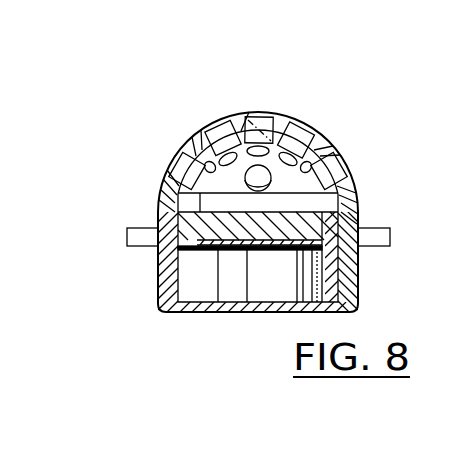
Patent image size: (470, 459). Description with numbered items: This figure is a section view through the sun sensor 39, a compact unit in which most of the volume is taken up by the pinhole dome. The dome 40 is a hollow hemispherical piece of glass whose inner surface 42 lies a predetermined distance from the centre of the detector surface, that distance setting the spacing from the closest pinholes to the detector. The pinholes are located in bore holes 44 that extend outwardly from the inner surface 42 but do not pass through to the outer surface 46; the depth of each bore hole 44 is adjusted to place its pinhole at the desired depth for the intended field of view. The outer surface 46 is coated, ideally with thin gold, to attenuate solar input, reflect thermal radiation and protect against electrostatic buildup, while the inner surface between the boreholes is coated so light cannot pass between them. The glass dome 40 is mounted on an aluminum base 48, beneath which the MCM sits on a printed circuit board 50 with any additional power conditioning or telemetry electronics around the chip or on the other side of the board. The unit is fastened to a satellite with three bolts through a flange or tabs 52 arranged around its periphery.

The sun sensor 39 is at (352, 140).
The dome 40 is at (355, 183).
The inner surface 42 is at (187, 143).
The bore holes 44 is at (297, 138).
The outer surface 46 is at (263, 113).
The aluminum base 48 is at (357, 271).
The printed circuit board 50 is at (195, 240).
The flange or tabs 52 is at (385, 237).